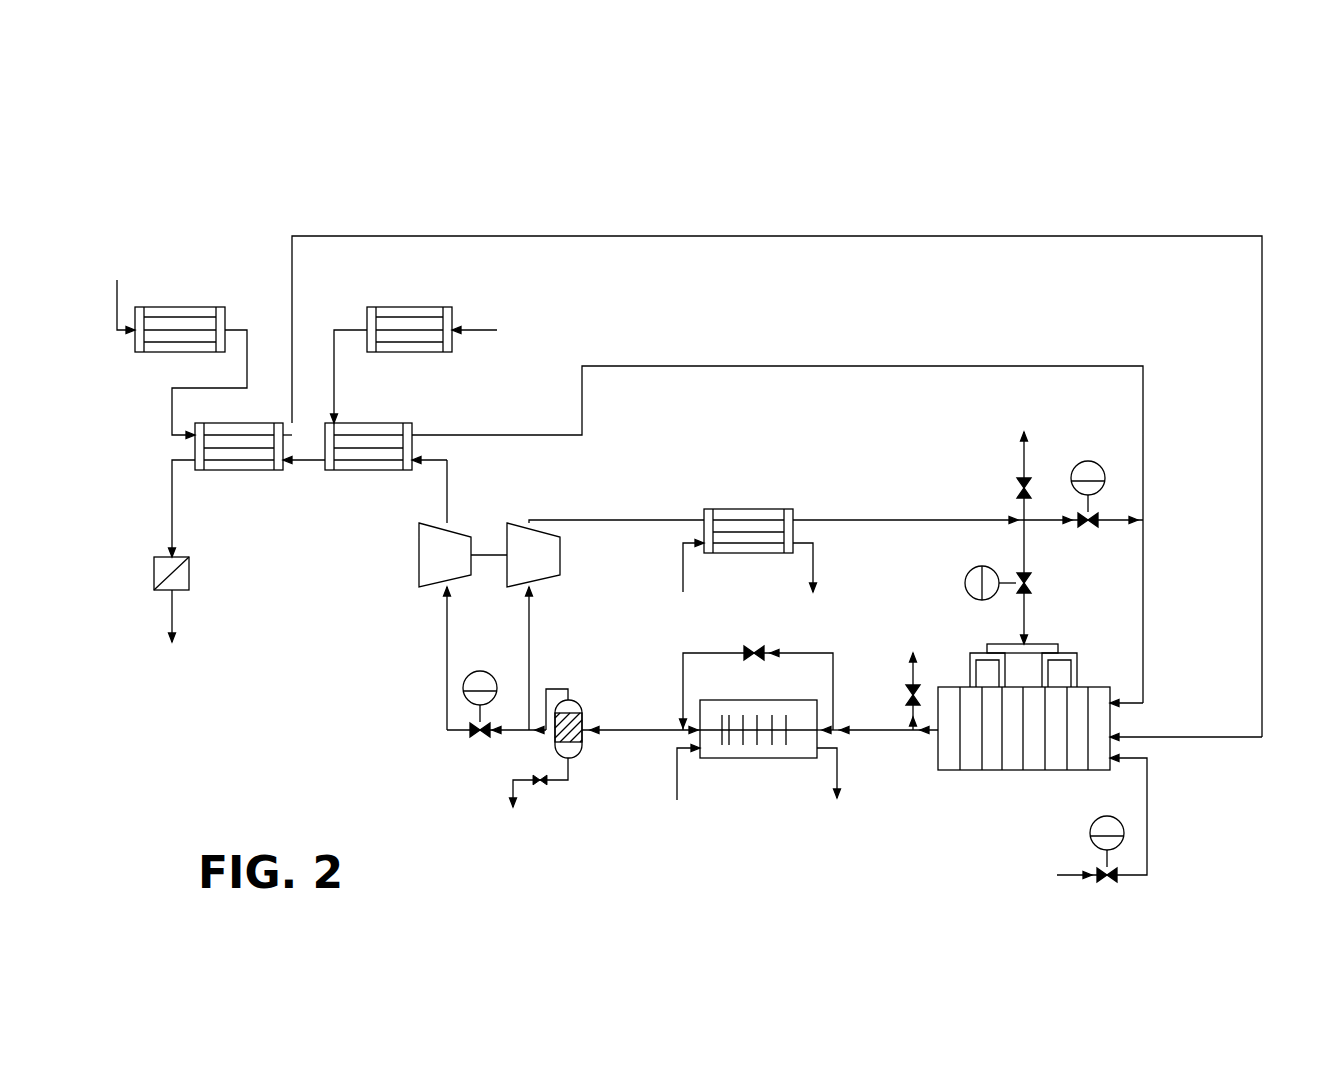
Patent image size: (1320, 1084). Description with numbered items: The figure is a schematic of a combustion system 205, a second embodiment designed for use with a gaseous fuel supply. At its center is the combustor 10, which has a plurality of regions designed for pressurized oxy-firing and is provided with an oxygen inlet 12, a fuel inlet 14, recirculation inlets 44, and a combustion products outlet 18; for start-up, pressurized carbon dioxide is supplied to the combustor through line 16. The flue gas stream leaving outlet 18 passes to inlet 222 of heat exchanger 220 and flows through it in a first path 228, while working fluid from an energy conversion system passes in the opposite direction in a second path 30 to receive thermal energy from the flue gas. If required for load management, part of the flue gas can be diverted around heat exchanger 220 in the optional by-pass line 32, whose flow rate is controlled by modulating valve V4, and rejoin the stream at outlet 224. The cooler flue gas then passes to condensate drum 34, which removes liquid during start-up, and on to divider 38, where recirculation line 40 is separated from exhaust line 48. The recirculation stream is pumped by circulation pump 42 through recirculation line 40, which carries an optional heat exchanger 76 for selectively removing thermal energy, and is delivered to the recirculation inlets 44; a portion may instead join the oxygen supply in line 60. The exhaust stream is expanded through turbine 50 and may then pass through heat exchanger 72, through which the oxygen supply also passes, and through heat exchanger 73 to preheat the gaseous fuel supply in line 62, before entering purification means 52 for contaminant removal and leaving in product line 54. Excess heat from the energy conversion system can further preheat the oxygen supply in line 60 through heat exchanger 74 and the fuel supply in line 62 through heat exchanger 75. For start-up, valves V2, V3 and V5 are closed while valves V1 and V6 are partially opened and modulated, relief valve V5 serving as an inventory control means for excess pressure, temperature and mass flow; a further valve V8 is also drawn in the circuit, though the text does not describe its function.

The combustion system 205 is at (498, 188).
The gaseous fuel supply line 62 is at (722, 236).
The oxygen supply line 60 is at (703, 366).
The heat exchanger 75 is at (198, 307).
The heat exchanger 74 is at (410, 307).
The heat exchanger 73 is at (240, 470).
The heat exchanger 72 is at (345, 470).
The heat exchanger 76 is at (750, 509).
The purification means 52 is at (190, 573).
The product line 54 is at (173, 614).
The turbine 50 is at (418, 557).
The circulation pump 42 is at (562, 554).
The exhaust line 48 is at (443, 657).
The divider 38 is at (530, 732).
The recirculation line 40 is at (900, 520).
The valve V6 is at (1017, 490).
The valve V3 is at (1086, 527).
The valve V2 is at (1030, 584).
The valve V1 is at (480, 734).
The modulating valve V4 is at (752, 651).
The relief valve V5 is at (905, 690).
The valve V8 is at (1100, 868).
The recirculation inlets 44 is at (1060, 650).
The oxygen inlet 12 is at (1117, 703).
The combustor 10 is at (1023, 770).
The fuel inlet 14 is at (1117, 733).
The line 16 is at (1147, 817).
The combustion products outlet 18 is at (937, 732).
The heat exchanger 220 is at (753, 760).
The first path 228 is at (721, 728).
The inlet 222 is at (822, 728).
The outlet 224 is at (697, 731).
The by-pass line 32 is at (682, 653).
The second path 30 is at (680, 753).
The condensate drum 34 is at (582, 748).